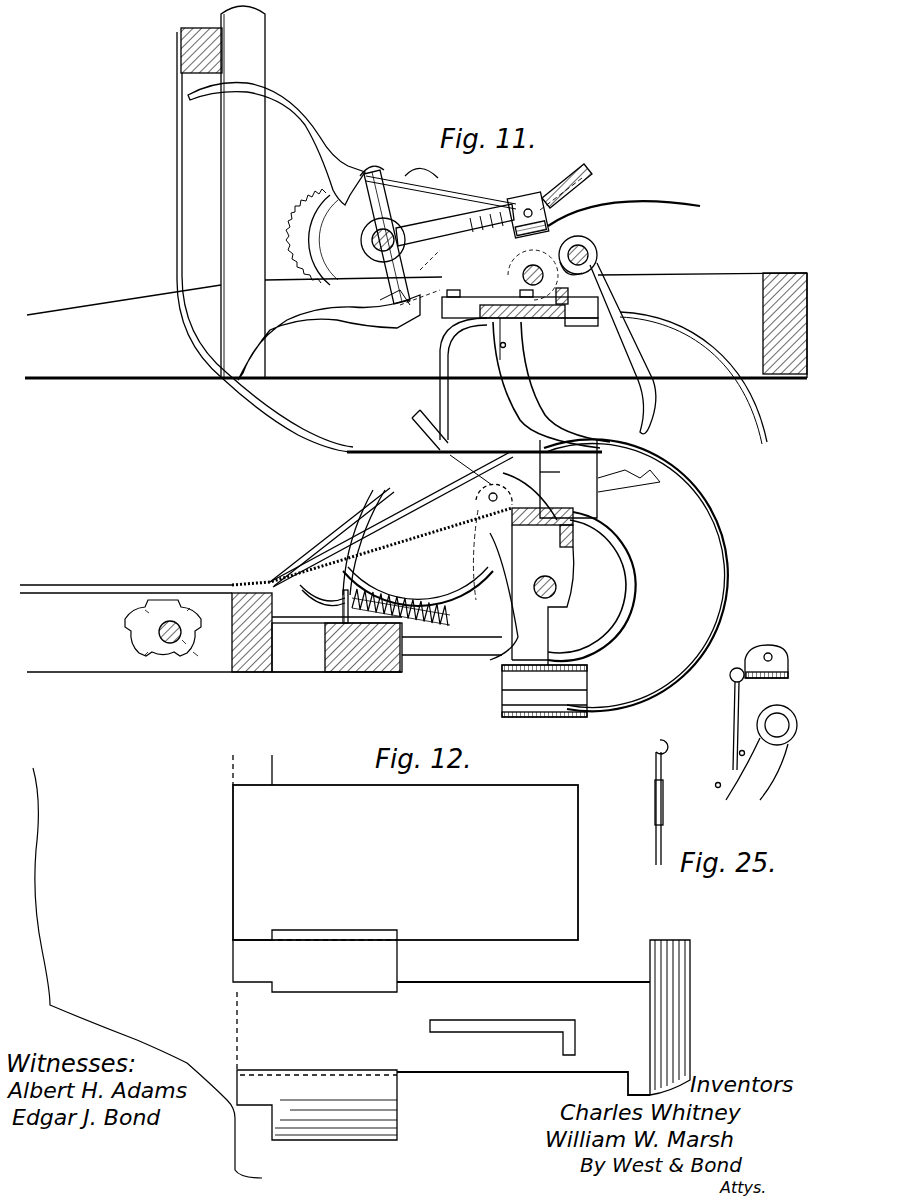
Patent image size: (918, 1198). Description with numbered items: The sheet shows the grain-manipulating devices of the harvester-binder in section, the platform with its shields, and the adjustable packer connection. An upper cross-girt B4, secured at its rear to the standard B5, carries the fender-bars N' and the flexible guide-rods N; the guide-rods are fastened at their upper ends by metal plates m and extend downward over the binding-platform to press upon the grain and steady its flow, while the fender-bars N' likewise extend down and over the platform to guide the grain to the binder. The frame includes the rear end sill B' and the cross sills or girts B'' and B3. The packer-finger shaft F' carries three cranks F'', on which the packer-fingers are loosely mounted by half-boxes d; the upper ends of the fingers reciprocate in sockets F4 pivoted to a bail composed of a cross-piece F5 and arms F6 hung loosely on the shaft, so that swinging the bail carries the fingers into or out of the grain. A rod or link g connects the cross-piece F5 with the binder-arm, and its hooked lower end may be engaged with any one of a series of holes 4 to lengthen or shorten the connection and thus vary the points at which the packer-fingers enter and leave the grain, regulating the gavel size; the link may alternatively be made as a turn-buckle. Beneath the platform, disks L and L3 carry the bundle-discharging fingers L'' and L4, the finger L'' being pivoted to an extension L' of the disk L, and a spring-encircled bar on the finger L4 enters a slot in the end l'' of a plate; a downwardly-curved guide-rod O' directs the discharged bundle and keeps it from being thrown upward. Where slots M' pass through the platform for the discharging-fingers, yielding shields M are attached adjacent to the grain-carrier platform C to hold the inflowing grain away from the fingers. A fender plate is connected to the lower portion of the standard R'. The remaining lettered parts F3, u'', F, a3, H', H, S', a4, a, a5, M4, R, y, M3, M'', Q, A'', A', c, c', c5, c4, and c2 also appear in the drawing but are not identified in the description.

In FIG. 11, the upper cross-girt B4 is at (201, 39).
In FIG. 11, the metal plates m is at (176, 50).
In FIG. 11, the guide-rods N is at (376, 279).
In FIG. 11, the standard B5 is at (243, 192).
In FIG. 11, the rear end sill B' is at (416, 325).
In FIG. 11, the cross sill or girt B3 is at (785, 310).
In FIG. 11, the curved arm F3 is at (304, 232).
In FIG. 11, the gear wheel u'' is at (312, 237).
In FIG. 11, the hub F is at (372, 240).
In FIG. 11, the packer-finger shaft F' is at (385, 235).
In FIG. 11, the arms of the bail or yoke F6 is at (455, 227).
In FIG. 11, the half-boxes d is at (441, 177).
In FIG. 11, the cross-piece of the bail or yoke F5 is at (528, 207).
In FIG. 25, the cross-piece of the bail or yoke F5 is at (756, 661).
In FIG. 11, the guides or sockets F4 is at (566, 187).
In FIG. 11, the grain-carrier platform C is at (624, 203).
In FIG. 12, the grain-carrier platform C is at (147, 973).
In FIG. 11, the pivot a3 is at (535, 275).
In FIG. 11, the pivot H' is at (589, 254).
In FIG. 11, the lever H is at (623, 348).
In FIG. 11, the plate S' is at (520, 321).
In FIG. 11, the holes 4 is at (495, 333).
In FIG. 25, the holes 4 is at (745, 755).
In FIG. 11, the fender-bars N' is at (451, 379).
In FIG. 11, the curved arm a4 is at (530, 403).
In FIG. 11, the rod a is at (423, 430).
In FIG. 25, the rod a is at (761, 752).
In FIG. 11, the downwardly-curved guide-rod O' is at (693, 378).
In FIG. 11, the block a5 is at (600, 479).
In FIG. 11, the wheel M4 is at (647, 575).
In FIG. 11, the disk L3 is at (630, 585).
In FIG. 11, the block R is at (542, 584).
In FIG. 11, the standard R' is at (539, 577).
In FIG. 11, the disk L is at (535, 569).
In FIG. 11, the block y is at (544, 691).
In FIG. 11, the extension of disk L' is at (404, 549).
In FIG. 11, the shields M is at (332, 537).
In FIG. 12, the shields M is at (315, 1035).
In FIG. 11, the arm M3 is at (391, 519).
In FIG. 11, the arm M'' is at (372, 546).
In FIG. 11, the bundle-discharging finger L4 is at (368, 542).
In FIG. 11, the bundle-discharging finger L'' is at (418, 585).
In FIG. 11, the slotted end of plate l'' is at (388, 609).
In FIG. 11, the block Q is at (337, 644).
In FIG. 11, the cross sill or girt B'' is at (452, 646).
In FIG. 11, the bar A'' is at (211, 628).
In FIG. 11, the block A' is at (239, 632).
In FIG. 11, the notched wheel c is at (163, 628).
In FIG. 11, the notch c' is at (170, 633).
In FIG. 11, the notch c5 is at (190, 644).
In FIG. 11, the notch c4 is at (205, 652).
In FIG. 11, the notch c2 is at (141, 661).
In FIG. 11, the cranks F'' is at (397, 277).
In FIG. 12, the slots M' is at (461, 925).
In FIG. 25, the rod or link g is at (699, 766).